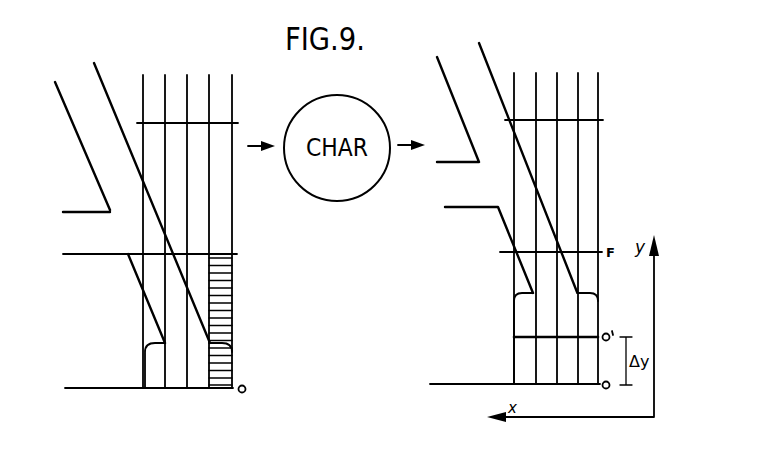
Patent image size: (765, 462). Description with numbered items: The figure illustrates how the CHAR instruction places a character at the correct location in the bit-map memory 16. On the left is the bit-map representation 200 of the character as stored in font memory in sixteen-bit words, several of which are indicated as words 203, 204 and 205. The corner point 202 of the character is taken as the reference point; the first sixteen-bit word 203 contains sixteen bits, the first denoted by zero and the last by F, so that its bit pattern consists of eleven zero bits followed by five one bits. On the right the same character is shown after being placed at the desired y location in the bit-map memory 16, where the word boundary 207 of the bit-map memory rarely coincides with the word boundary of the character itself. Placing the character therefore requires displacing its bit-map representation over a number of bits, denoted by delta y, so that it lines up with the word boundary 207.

The bit-map memory 16 is at (468, 327).
The bit-map representation 200 is at (112, 343).
The corner point 202 is at (232, 385).
The first 16-bit word 203 is at (232, 317).
The 16-bit word 204 is at (200, 291).
The 16-bit word 205 is at (223, 218).
The word boundary 207 is at (601, 389).